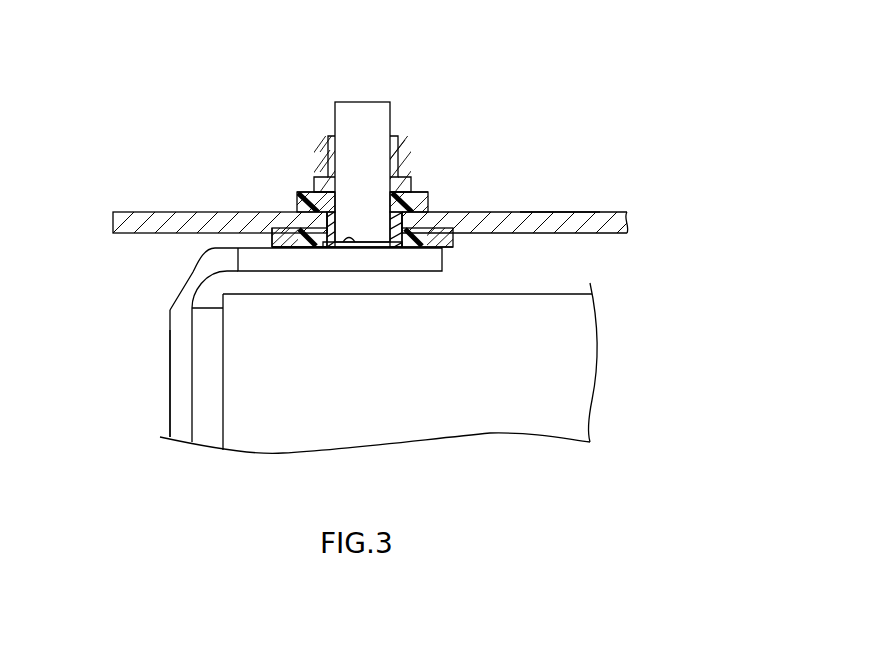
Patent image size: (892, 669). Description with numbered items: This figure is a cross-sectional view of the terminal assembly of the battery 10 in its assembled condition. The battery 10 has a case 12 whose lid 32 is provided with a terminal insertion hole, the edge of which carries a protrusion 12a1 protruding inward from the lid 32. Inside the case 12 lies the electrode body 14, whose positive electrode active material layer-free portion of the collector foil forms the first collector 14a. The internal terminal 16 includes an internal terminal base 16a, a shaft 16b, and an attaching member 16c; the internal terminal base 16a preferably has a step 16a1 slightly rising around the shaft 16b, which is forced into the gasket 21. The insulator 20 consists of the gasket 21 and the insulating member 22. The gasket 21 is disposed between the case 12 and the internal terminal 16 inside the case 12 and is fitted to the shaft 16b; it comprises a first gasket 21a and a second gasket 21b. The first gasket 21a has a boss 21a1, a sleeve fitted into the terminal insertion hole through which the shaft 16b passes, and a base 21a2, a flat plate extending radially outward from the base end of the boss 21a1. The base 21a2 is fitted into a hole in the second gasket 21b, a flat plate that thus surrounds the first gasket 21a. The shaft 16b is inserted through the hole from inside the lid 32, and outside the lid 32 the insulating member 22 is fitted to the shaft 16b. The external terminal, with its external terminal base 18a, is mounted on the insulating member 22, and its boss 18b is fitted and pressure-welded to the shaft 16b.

The battery 10 is at (168, 75).
The case 12 is at (627, 183).
The protrusion 12a1 is at (407, 250).
The electrode body 14 is at (557, 388).
The first collector 14a is at (203, 415).
The internal terminal 16 is at (138, 310).
The internal terminal base 16a is at (443, 263).
The step 16a1 is at (345, 247).
The shaft 16b is at (390, 105).
The attaching member 16c is at (170, 370).
The external terminal base 18a is at (412, 180).
The boss 18b is at (398, 140).
The insulator 20 is at (285, 175).
The gasket 21 is at (482, 248).
The first gasket 21a is at (425, 252).
The boss 21a1 is at (327, 223).
The base 21a2 is at (313, 250).
The second gasket 21b is at (272, 240).
The insulating member 22 is at (428, 198).
The lid 32 is at (570, 212).